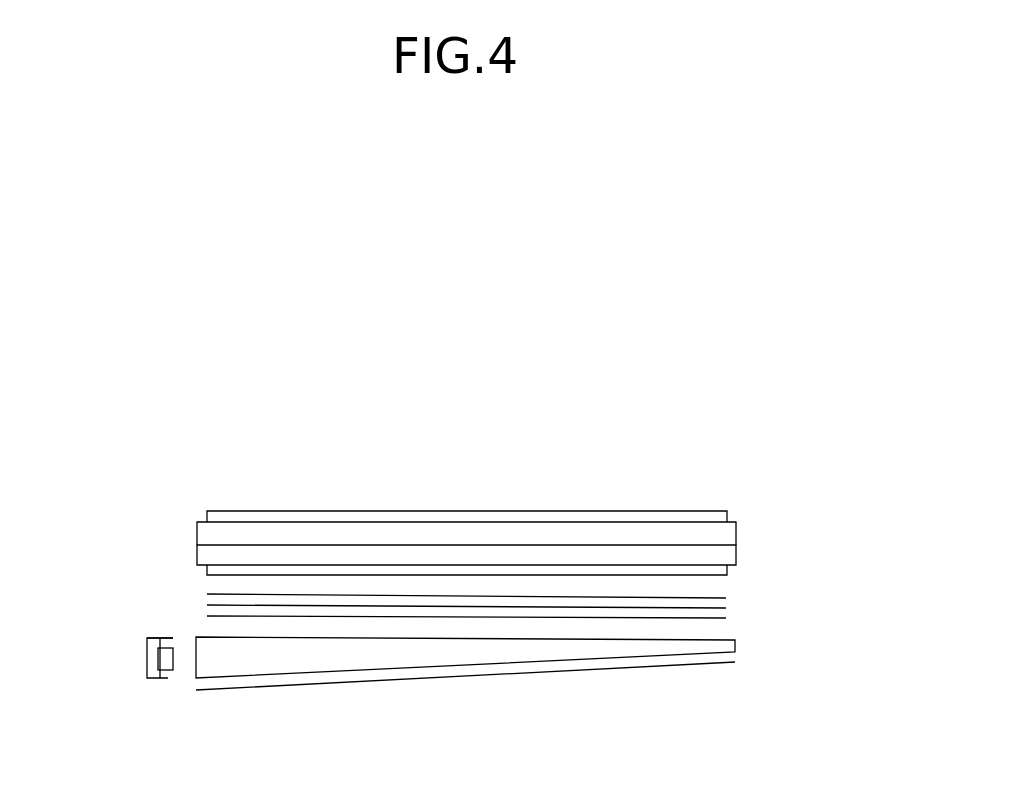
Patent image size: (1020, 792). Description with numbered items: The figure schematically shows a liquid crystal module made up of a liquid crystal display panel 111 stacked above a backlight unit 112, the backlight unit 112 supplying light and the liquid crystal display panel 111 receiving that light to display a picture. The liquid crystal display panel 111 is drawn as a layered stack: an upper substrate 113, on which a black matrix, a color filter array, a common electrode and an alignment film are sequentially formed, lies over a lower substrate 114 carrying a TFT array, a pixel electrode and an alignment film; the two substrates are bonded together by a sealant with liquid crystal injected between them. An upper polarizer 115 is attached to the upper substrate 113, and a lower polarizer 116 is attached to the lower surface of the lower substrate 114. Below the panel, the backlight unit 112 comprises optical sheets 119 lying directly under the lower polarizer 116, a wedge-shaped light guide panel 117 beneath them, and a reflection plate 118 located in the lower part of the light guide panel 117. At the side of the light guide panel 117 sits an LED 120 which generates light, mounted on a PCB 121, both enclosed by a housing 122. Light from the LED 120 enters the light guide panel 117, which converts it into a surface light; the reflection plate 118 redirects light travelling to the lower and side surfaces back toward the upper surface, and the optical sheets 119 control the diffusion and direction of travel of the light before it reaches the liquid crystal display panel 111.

The liquid crystal display panel 111 is at (507, 512).
The backlight unit 112 is at (534, 677).
The upper substrate 113 is at (434, 531).
The lower substrate 114 is at (512, 555).
The upper polarizer 115 is at (372, 515).
The lower polarizer 116 is at (566, 570).
The light guide panel 117 is at (293, 658).
The reflection plate 118 is at (487, 678).
The optical sheets 119 is at (737, 595).
The LED 120 is at (168, 668).
The PCB 121 is at (155, 668).
The housing 122 is at (155, 637).